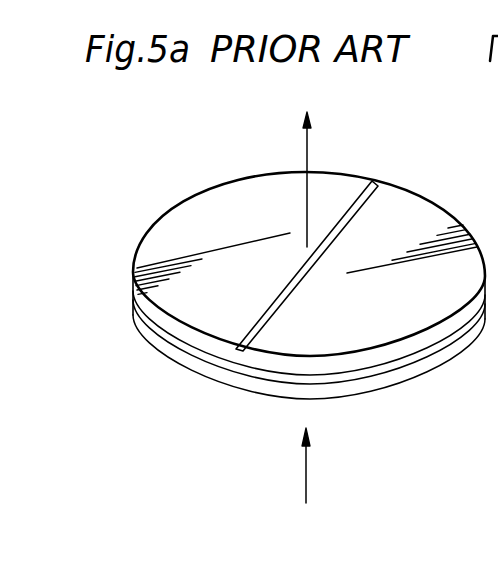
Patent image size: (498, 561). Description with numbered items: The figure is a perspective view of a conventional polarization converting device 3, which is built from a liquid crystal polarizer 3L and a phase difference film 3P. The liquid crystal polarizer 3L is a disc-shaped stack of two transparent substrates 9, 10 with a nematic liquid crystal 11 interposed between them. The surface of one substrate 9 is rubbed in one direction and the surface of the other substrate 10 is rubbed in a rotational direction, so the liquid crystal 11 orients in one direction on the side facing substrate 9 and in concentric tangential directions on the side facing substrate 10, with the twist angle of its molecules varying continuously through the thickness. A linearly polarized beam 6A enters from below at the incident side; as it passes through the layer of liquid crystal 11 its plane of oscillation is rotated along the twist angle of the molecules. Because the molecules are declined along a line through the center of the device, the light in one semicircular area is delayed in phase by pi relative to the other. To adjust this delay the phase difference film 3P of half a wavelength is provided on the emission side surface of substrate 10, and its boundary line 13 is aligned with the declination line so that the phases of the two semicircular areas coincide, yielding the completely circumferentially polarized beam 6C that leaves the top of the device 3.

The polarization converting device 3 is at (270, 137).
The phase difference film 3P is at (221, 249).
The liquid crystal polarizer 3L is at (78, 274).
The transparent substrate 10 is at (147, 308).
The nematic liquid crystal 11 is at (162, 328).
The transparent substrate 9 is at (160, 345).
The boundary line 13 is at (379, 183).
The circumferentially polarized beam 6C is at (308, 148).
The linearly polarized beam 6A is at (306, 479).